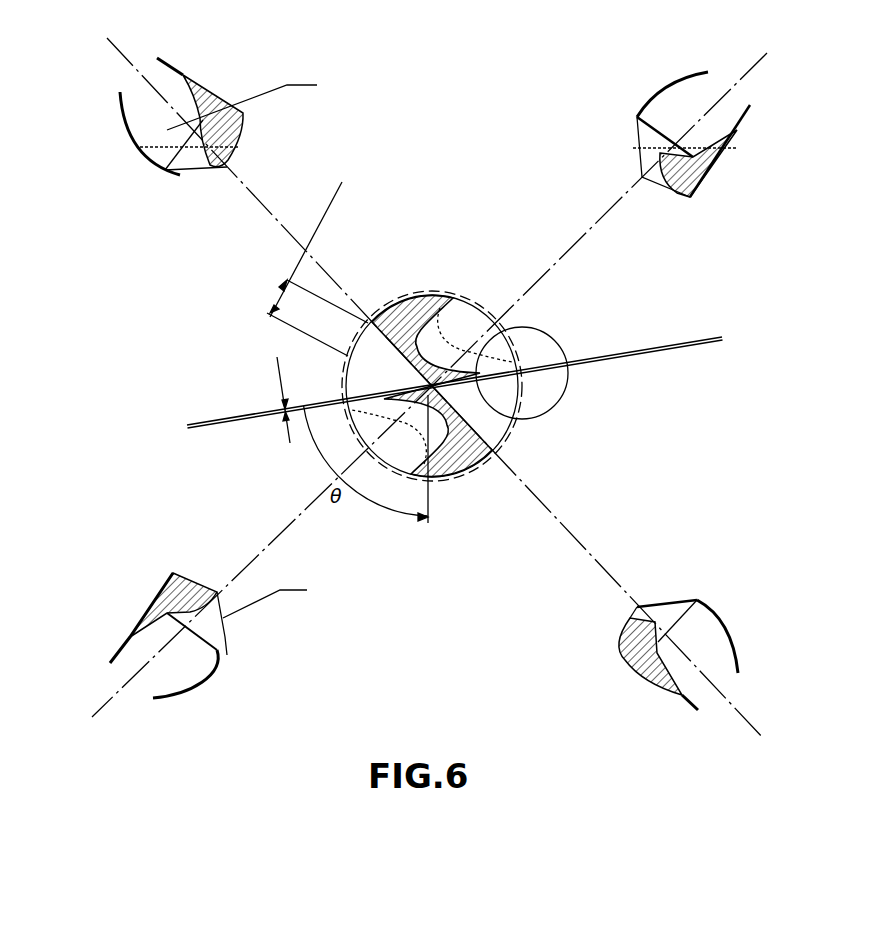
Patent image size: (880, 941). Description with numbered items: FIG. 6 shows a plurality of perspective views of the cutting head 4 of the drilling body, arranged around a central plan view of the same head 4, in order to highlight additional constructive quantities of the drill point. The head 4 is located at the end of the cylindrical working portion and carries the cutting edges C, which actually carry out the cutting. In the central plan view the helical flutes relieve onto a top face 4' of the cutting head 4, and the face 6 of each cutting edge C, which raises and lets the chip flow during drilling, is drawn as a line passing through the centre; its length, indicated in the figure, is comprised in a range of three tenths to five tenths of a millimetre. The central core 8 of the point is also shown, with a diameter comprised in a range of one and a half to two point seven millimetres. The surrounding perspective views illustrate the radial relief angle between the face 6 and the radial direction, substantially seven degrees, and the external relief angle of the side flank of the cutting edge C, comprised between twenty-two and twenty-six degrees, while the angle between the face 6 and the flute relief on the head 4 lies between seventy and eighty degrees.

The head 4 is at (406, 363).
The top face 4' is at (460, 387).
The face 6 is at (463, 383).
The central core 8 is at (310, 269).
The cutting edges C is at (357, 418).